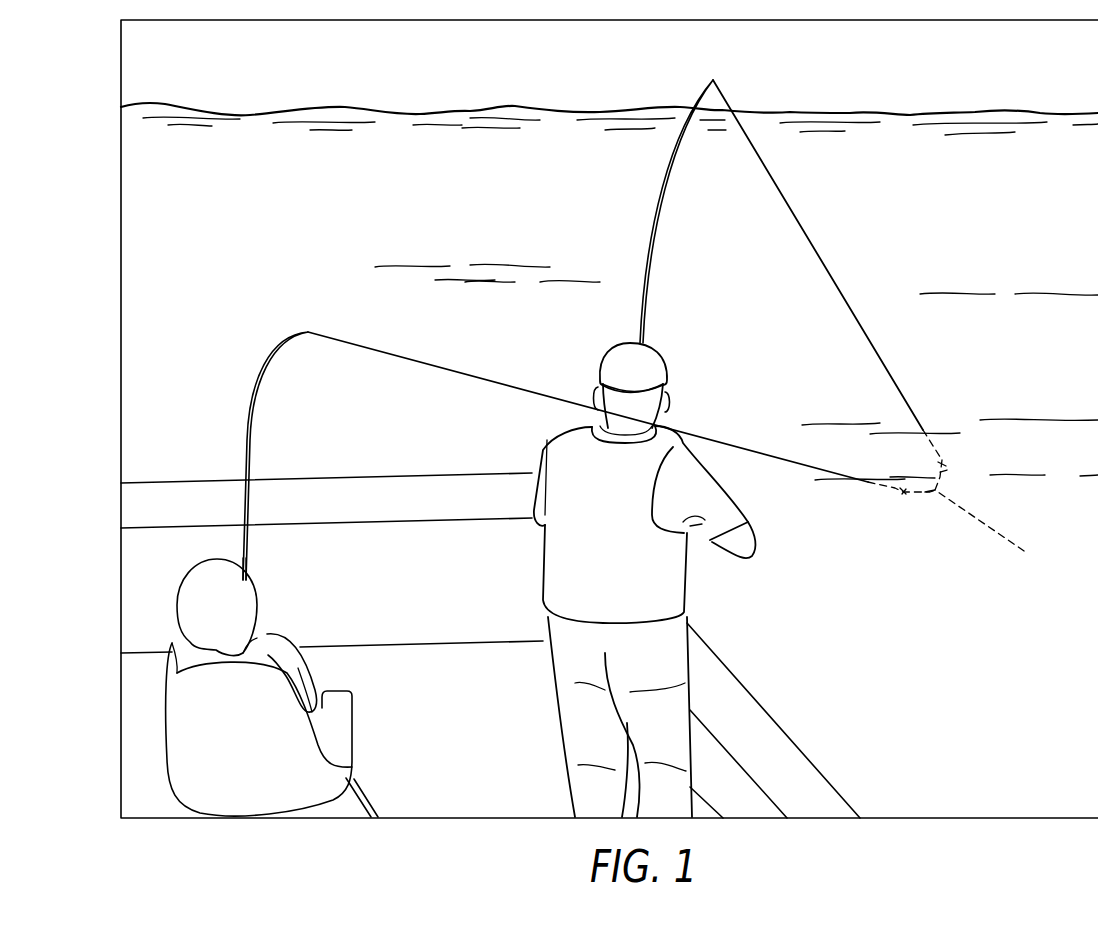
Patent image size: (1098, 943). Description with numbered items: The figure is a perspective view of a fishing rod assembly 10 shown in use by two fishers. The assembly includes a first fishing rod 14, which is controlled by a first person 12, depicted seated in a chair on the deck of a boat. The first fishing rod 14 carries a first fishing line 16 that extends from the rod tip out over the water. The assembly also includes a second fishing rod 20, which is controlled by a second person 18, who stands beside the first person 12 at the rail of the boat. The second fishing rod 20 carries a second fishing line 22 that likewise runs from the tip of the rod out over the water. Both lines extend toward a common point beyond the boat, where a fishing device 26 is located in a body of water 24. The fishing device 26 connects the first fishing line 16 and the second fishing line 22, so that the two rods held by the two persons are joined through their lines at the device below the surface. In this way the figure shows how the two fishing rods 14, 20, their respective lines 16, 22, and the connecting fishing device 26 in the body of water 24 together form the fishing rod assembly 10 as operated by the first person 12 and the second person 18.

The fishing rod assembly 10 is at (609, 419).
The first person 12 is at (188, 656).
The first fishing rod 14 is at (250, 395).
The first fishing line 16 is at (446, 364).
The second person 18 is at (570, 467).
The second fishing rod 20 is at (660, 200).
The second fishing line 22 is at (818, 243).
The body of water 24 is at (1074, 395).
The fishing device 26 is at (958, 478).